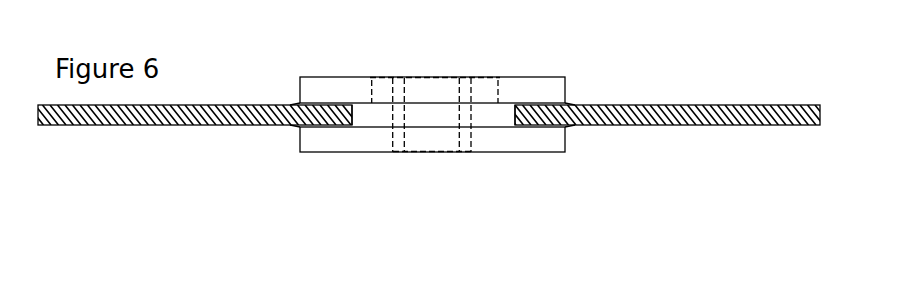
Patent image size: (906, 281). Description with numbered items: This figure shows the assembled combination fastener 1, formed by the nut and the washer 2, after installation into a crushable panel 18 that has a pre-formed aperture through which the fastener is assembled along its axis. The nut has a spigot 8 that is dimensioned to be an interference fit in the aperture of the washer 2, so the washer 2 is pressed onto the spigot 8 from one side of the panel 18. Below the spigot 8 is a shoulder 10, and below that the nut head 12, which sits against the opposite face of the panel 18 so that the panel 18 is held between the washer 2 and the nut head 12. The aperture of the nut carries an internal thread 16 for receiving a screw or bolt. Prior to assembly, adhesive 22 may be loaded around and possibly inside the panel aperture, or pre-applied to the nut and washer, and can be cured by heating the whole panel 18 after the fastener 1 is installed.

The combination fastener 1 is at (425, 128).
The washer 2 is at (545, 87).
The spigot 8 is at (378, 87).
The shoulder 10 is at (480, 117).
The nut head 12 is at (527, 143).
The internal thread 16 is at (398, 148).
The crushable panel 18 is at (697, 115).
The adhesive 22 is at (288, 126).